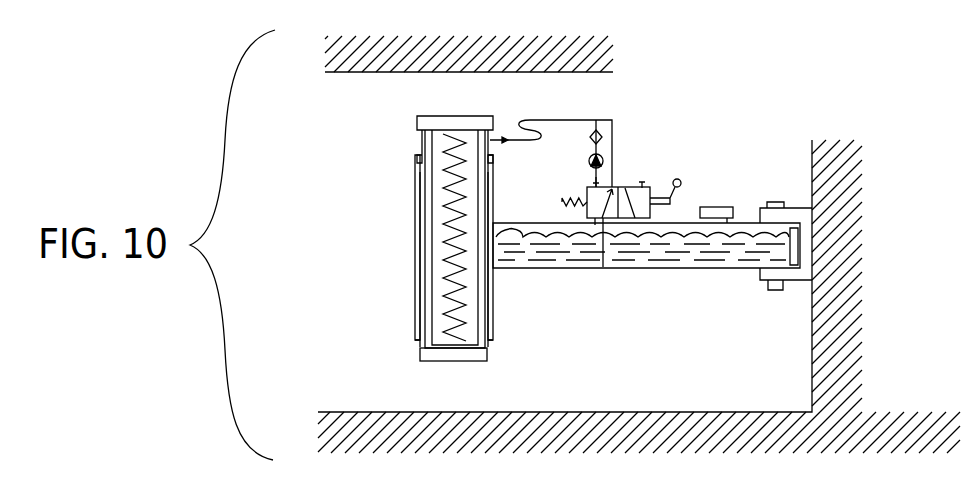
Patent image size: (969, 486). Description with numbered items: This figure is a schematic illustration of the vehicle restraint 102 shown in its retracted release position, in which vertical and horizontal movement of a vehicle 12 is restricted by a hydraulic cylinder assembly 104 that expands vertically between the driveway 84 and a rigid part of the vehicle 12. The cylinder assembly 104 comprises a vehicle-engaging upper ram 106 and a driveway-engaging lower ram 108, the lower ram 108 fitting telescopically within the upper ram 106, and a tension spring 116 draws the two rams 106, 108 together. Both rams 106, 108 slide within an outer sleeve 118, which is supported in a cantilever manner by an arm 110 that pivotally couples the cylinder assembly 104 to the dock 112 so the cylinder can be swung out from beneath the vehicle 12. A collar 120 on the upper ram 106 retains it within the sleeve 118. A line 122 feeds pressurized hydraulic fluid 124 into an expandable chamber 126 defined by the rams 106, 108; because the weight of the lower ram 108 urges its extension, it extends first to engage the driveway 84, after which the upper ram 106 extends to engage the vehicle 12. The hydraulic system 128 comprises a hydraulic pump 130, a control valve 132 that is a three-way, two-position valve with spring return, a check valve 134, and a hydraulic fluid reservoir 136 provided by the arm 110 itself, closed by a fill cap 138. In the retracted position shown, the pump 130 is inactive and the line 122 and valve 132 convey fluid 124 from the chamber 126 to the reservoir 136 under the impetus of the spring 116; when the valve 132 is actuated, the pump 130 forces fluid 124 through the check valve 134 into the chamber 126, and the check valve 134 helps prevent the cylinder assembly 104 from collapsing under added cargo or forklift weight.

The vehicle 12 is at (578, 73).
The driveway 84 is at (712, 411).
The vehicle restraint 102 is at (316, 217).
The hydraulic cylinder assembly 104 is at (415, 322).
The upper ram 106 is at (430, 113).
The lower ram 108 is at (487, 361).
The arm 110 is at (721, 269).
The dock 112 is at (666, 393).
The tension spring 116 is at (433, 287).
The outer sleeve 118 is at (418, 207).
The collar 120 is at (413, 161).
The line 122 is at (562, 118).
The hydraulic fluid 124 is at (687, 231).
The expandable chamber 126 is at (437, 258).
The hydraulic system 128 is at (630, 138).
The hydraulic pump 130 is at (590, 167).
The control valve 132 is at (598, 224).
The check valve 134 is at (591, 139).
The hydraulic fluid reservoir 136 is at (649, 269).
The fill cap 138 is at (760, 208).